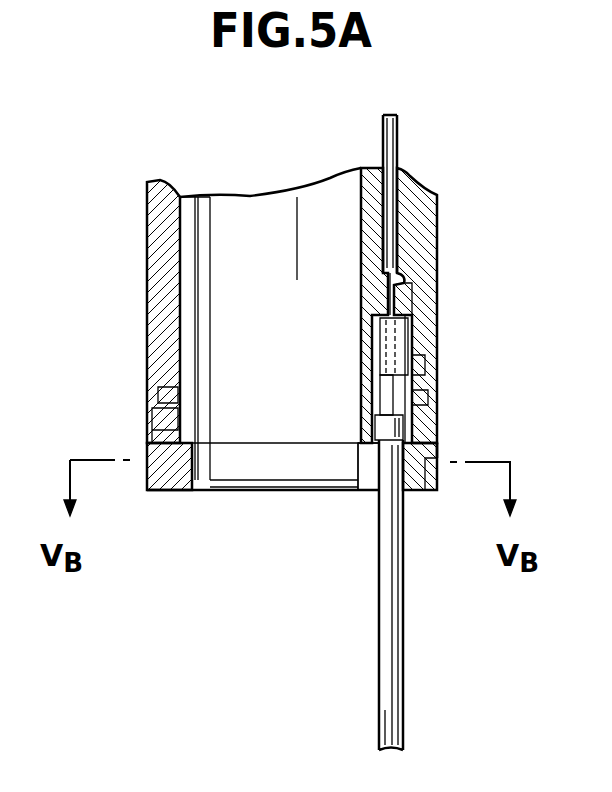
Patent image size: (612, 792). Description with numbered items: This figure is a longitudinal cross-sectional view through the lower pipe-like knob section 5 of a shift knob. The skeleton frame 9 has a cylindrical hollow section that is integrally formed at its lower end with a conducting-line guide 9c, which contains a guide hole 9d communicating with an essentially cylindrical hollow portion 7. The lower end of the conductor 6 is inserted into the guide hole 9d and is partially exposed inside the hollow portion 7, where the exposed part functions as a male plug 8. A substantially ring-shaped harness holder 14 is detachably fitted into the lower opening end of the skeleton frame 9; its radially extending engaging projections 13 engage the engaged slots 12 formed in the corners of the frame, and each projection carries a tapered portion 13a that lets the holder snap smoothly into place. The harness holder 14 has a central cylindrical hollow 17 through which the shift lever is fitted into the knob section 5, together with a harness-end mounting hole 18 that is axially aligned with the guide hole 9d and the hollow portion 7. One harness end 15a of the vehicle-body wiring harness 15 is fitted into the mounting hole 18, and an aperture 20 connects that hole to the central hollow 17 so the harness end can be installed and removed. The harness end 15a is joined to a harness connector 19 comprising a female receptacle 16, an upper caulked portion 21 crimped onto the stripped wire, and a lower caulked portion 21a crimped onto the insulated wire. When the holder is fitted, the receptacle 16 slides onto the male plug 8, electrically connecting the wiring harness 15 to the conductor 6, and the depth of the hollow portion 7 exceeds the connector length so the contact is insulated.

The lower pipe-like knob section 5 is at (437, 237).
The conductor 6 is at (397, 128).
The cylindrical hollow portion 7 is at (415, 408).
The male plug 8 is at (425, 365).
The skeleton frame 9 is at (245, 385).
The conducting-line guide 9c is at (412, 290).
The guide hole 9d is at (405, 280).
The engaged slot 12 is at (147, 440).
The engaging projection 13 is at (147, 462).
The tapered portion 13a is at (440, 462).
The harness holder 14 is at (185, 475).
The vehicle-body wiring harness 15 is at (400, 623).
The harness end 15a is at (378, 447).
The female receptacle 16 is at (412, 330).
The central cylindrical hollow 17 is at (320, 470).
The harness-end mounting hole 18 is at (403, 470).
The harness connector 19 is at (378, 320).
The aperture 20 is at (363, 470).
The upper caulked portion 21 is at (380, 385).
The lower caulked portion 21a is at (378, 425).